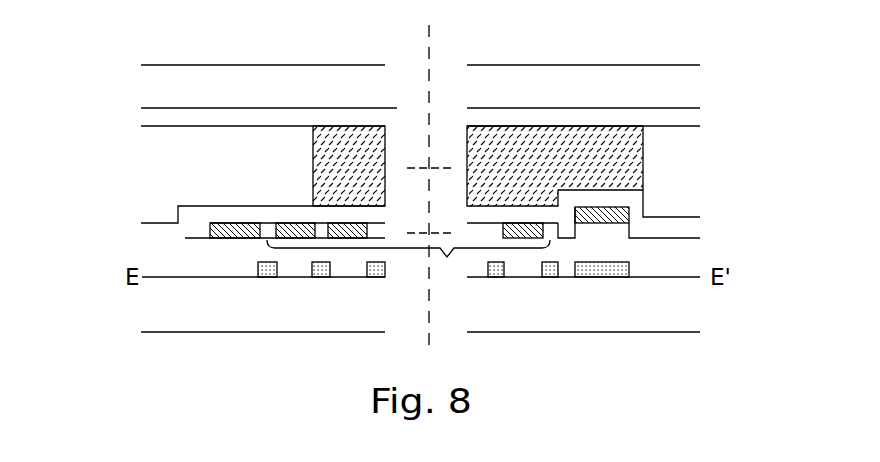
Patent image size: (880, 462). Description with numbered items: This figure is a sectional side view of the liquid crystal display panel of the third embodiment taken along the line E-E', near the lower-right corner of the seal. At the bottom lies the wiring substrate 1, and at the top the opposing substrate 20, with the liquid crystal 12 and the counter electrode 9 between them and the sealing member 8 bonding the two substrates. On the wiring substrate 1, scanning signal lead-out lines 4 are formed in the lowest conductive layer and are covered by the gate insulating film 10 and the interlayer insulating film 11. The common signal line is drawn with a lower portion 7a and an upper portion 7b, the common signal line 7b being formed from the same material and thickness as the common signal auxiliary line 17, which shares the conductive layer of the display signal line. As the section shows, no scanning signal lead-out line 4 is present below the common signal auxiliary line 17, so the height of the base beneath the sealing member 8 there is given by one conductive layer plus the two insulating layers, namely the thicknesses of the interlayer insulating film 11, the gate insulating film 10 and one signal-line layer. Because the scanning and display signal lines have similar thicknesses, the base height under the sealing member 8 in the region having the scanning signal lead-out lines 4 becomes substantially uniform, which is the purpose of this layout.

The wiring substrate 1 is at (282, 327).
The scanning signal lead-out line 4 is at (392, 285).
The capacitor electrode 7a is at (607, 268).
The common signal line 7b is at (630, 212).
The sealing member 8 is at (572, 138).
The counter electrode 9 is at (260, 118).
The gate insulating film 10 is at (687, 257).
The interlayer insulating film 11 is at (190, 228).
The liquid crystal 12 is at (173, 170).
The common signal auxiliary line 17 is at (408, 265).
The opposing substrate 20 is at (175, 73).